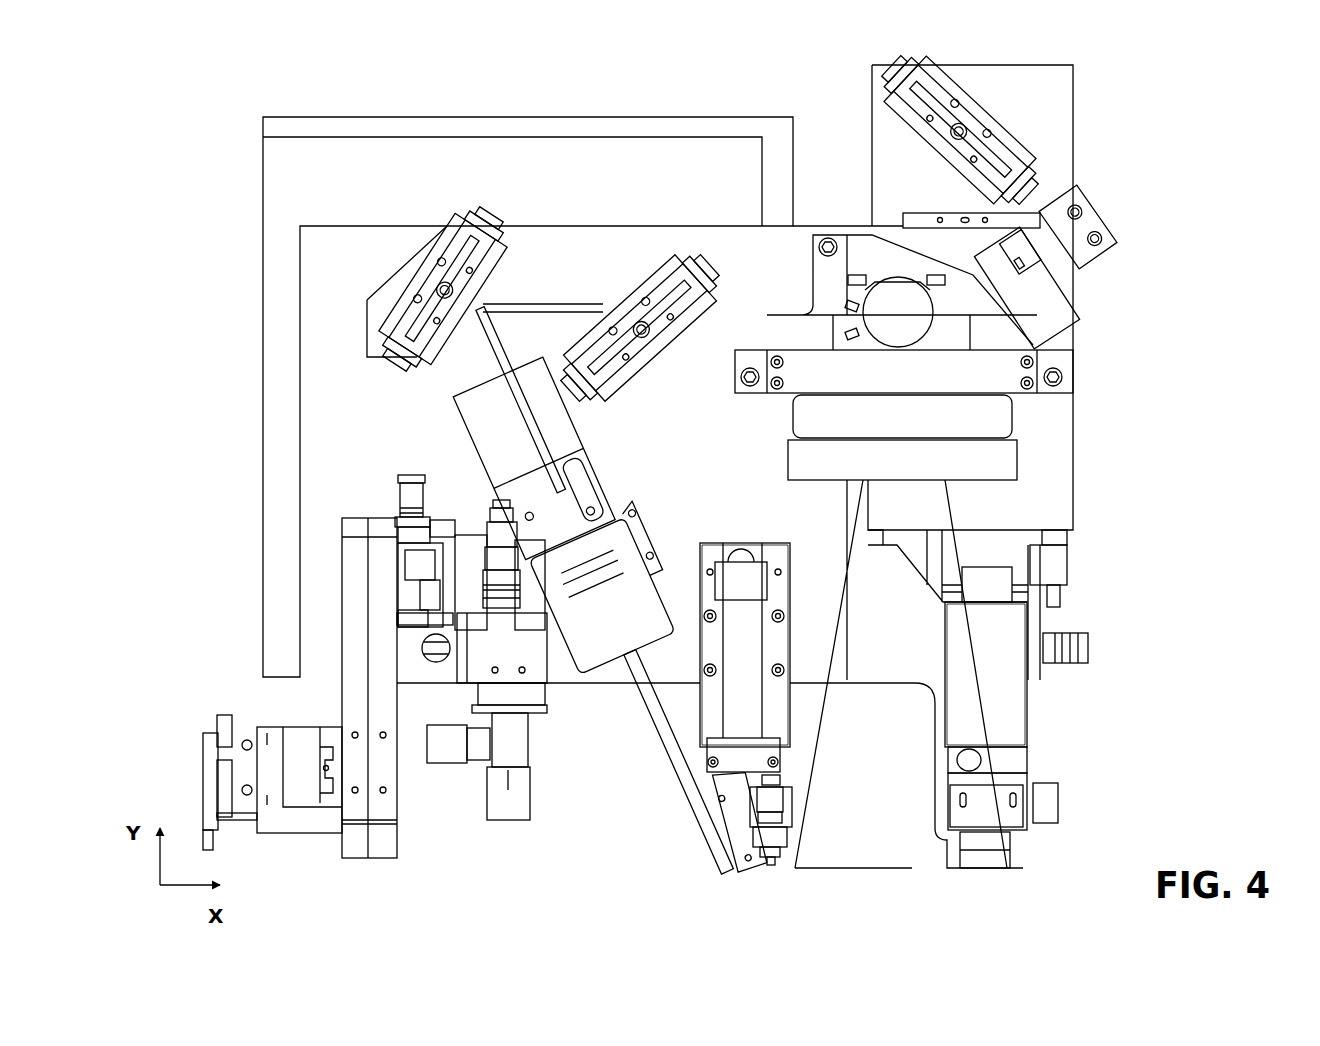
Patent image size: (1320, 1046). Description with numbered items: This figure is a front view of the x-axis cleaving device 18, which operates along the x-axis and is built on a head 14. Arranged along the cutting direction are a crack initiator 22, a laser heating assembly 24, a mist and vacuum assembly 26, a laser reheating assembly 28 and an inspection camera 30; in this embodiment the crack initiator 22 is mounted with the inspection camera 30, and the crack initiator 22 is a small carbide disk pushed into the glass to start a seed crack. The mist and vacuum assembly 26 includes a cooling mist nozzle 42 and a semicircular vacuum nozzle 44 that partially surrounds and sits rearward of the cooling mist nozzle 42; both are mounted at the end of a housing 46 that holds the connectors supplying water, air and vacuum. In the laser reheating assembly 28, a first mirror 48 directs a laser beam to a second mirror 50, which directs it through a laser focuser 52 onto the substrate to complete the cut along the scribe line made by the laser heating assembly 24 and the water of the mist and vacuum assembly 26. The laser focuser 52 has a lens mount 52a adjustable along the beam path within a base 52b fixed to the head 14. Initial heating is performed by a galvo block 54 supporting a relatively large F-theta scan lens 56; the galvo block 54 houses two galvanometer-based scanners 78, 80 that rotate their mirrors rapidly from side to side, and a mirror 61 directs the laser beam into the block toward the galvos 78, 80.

The head 14 is at (708, 442).
The x-axis cleaving device 18 is at (546, 870).
The crack initiator 22 is at (248, 731).
The laser heating assembly 24 is at (1080, 356).
The mist and vacuum assembly 26 is at (798, 556).
The laser reheating assembly 28 is at (430, 388).
The inspection camera 30 is at (383, 692).
The cooling mist nozzle 42 is at (784, 812).
The vacuum nozzle 44 is at (746, 831).
The housing 46 is at (757, 662).
The first mirror 48 is at (670, 256).
The second mirror 50 is at (467, 236).
The laser focuser 52 is at (607, 689).
The lens mount 52a is at (634, 644).
The base 52b is at (606, 499).
The galvo block 54 is at (1032, 302).
The F-theta scan lens 56 is at (1000, 460).
The mirror 61 is at (953, 100).
The galvanometer-based scanner 78 is at (1072, 195).
The galvanometer-based scanner 80 is at (893, 298).